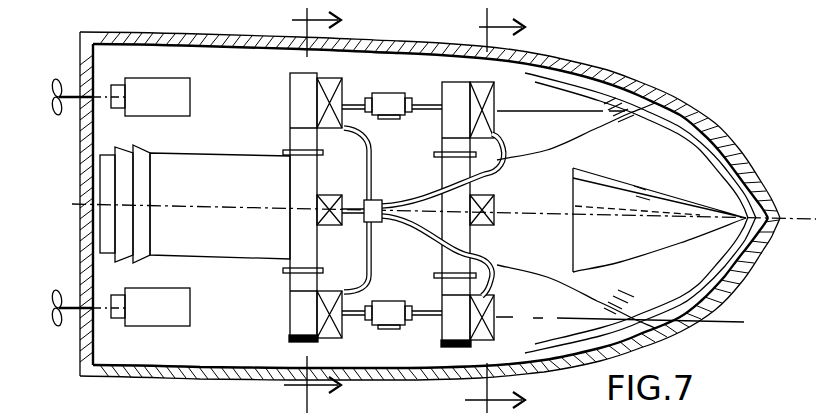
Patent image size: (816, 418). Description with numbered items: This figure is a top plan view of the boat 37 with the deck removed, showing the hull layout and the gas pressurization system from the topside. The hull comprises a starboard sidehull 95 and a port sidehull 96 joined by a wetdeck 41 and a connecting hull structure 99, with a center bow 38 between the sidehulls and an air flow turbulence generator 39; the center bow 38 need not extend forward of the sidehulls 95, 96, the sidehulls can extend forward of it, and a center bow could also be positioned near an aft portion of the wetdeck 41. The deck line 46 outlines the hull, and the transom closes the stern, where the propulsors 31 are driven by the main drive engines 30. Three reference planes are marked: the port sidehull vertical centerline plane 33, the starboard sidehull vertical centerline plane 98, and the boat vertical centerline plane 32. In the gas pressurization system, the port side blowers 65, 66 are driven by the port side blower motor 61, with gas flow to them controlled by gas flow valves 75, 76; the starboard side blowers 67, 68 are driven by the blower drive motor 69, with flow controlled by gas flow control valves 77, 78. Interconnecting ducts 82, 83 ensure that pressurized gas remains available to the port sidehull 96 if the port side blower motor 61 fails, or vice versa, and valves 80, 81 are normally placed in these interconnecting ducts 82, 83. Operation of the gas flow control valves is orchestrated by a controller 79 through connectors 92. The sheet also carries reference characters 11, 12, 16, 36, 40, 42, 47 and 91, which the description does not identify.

The section line 11 is at (312, 209).
The section line 12 is at (495, 209).
The hull assembly 16 is at (216, 12).
The main drive engines 30 is at (178, 108).
The propulsors 31 is at (64, 108).
The boat vertical centerline plane 32 is at (573, 183).
The port sidehull vertical centerline plane 33 is at (575, 113).
The transom 36 is at (122, 2).
The boat 37 is at (637, 79).
The center bow 38 is at (627, 206).
The air flow turbulence generator 39 is at (122, 197).
The compartment 40 is at (247, 300).
The wetdeck 41 is at (274, 194).
The bottom 42 is at (158, 417).
The deck line 46 is at (544, 53).
The bottom panel 47 is at (229, 407).
The port side blower motor 61 is at (381, 72).
The port side blower 65 is at (455, 88).
The port side blower 66 is at (297, 98).
The starboard side blower 67 is at (442, 333).
The starboard side blower 68 is at (295, 327).
The blower drive motor 69 is at (384, 330).
The gas flow valve 75 is at (497, 97).
The gas flow valve 76 is at (334, 79).
The gas flow control valve 77 is at (494, 314).
The gas flow control valve 78 is at (347, 303).
The controller 79 is at (364, 202).
The valve 80 is at (496, 196).
The valve 81 is at (272, 215).
The interconnecting duct 82 is at (472, 240).
The interconnecting duct 83 is at (292, 246).
The transom plate 91 is at (134, 12).
The connectors 92 is at (404, 196).
The starboard sidehull 95 is at (580, 315).
The port sidehull 96 is at (588, 100).
The starboard sidehull vertical centerline plane 98 is at (707, 323).
The connecting hull structure 99 is at (240, 193).